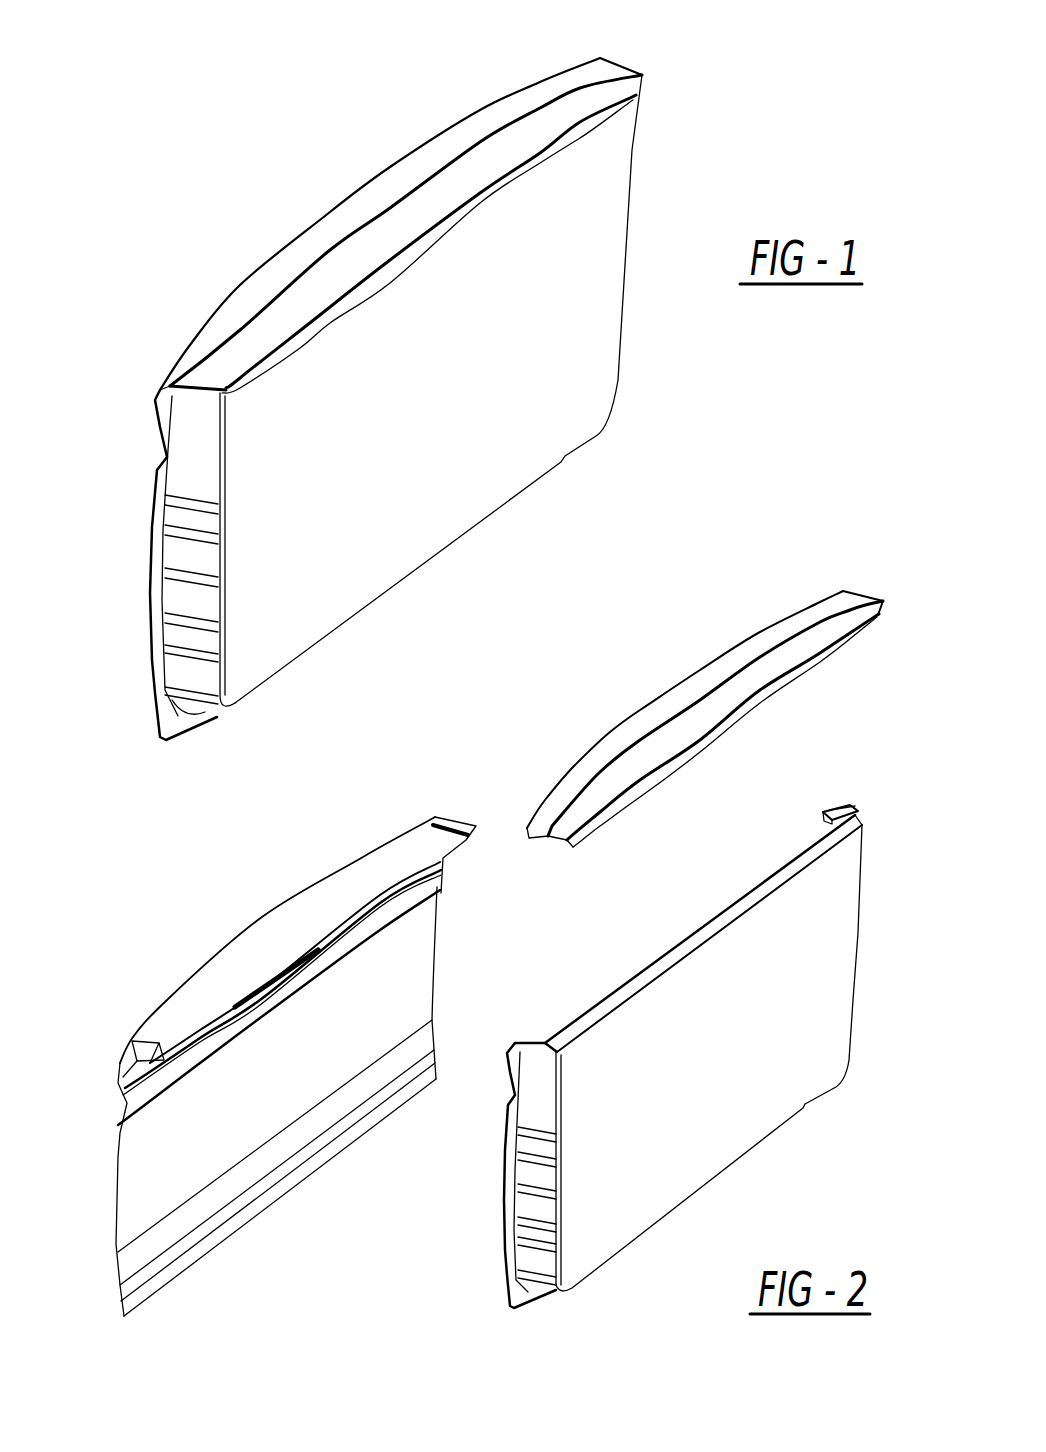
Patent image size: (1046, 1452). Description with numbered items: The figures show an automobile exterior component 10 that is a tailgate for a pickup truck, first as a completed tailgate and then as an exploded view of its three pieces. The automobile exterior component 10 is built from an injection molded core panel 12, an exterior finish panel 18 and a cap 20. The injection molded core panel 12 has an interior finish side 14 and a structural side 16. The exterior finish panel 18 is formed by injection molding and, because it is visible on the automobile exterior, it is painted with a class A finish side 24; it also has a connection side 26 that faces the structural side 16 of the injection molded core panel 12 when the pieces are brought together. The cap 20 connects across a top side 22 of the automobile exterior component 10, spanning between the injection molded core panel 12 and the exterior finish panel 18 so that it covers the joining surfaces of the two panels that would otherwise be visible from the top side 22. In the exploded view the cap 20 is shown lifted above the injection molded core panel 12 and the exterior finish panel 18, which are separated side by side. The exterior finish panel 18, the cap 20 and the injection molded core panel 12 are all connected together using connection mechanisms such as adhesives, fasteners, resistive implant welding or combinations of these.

In FIG. 1, the automobile exterior component 10 is at (396, 376).
In FIG. 2, the injection molded core panel 12 is at (726, 993).
In FIG. 2, the interior finish side 14 is at (832, 1007).
In FIG. 2, the structural side 16 is at (766, 846).
In FIG. 2, the exterior finish panel 18 is at (301, 1028).
In FIG. 2, the cap 20 is at (823, 630).
In FIG. 1, the top side 22 is at (536, 55).
In FIG. 2, the class A finish side 24 is at (341, 845).
In FIG. 2, the connection side 26 is at (415, 960).